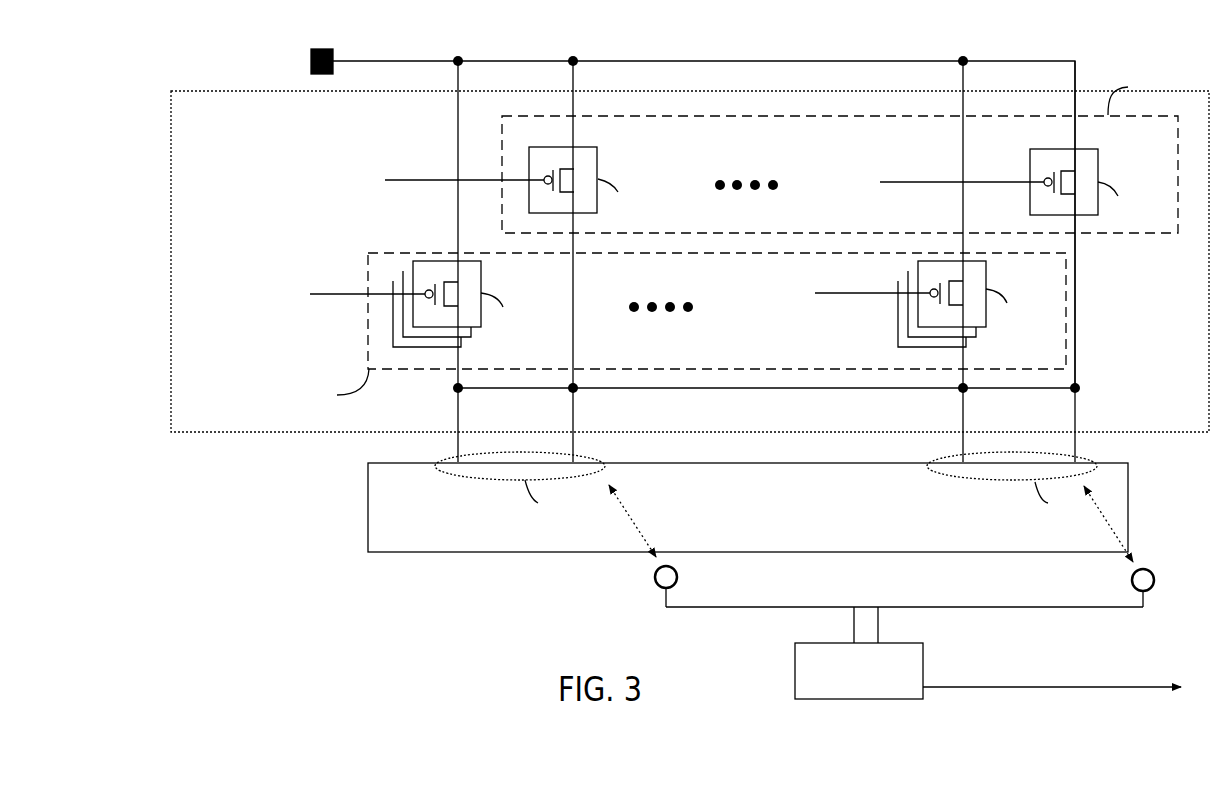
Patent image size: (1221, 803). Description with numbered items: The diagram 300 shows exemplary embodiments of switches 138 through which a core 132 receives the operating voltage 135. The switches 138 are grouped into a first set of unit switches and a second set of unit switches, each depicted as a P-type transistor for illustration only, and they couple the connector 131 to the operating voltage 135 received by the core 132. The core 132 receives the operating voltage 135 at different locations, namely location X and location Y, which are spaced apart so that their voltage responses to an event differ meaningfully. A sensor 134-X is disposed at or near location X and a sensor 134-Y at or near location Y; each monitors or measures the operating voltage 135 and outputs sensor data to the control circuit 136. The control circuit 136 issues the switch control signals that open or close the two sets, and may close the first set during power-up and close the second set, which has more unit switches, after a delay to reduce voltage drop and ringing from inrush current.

The diagram 300 is at (210, 29).
The connector 131 is at (333, 49).
The switches 138 is at (290, 432).
The operating voltage 135 is at (1078, 386).
The core 132 is at (748, 502).
The sensor 134-X is at (677, 577).
The sensor 134-Y is at (1155, 580).
The control circuit 136 is at (923, 665).